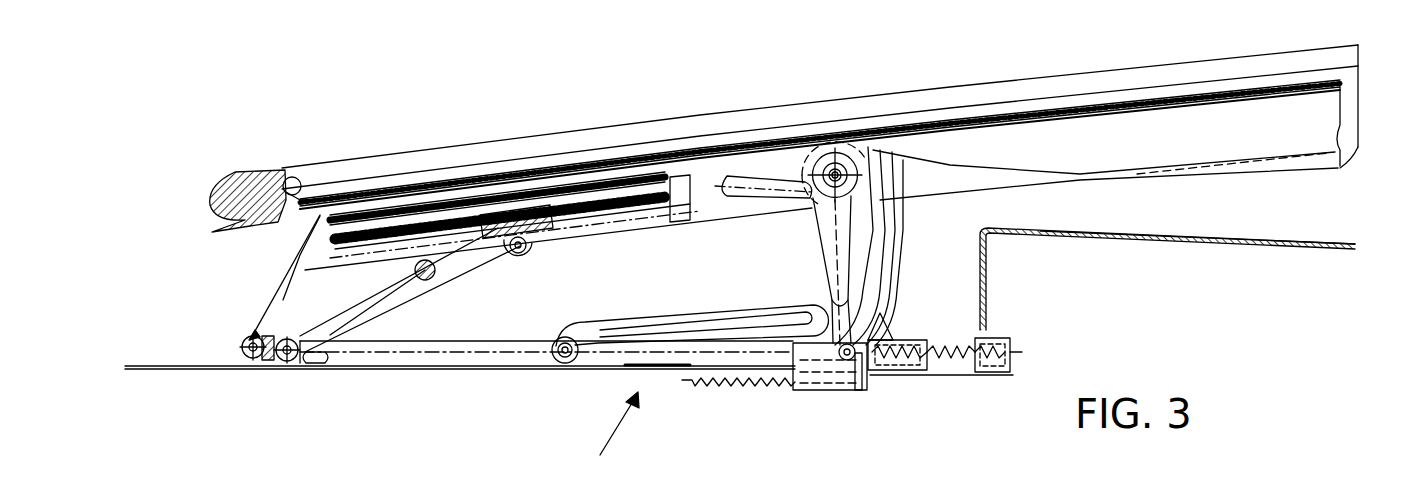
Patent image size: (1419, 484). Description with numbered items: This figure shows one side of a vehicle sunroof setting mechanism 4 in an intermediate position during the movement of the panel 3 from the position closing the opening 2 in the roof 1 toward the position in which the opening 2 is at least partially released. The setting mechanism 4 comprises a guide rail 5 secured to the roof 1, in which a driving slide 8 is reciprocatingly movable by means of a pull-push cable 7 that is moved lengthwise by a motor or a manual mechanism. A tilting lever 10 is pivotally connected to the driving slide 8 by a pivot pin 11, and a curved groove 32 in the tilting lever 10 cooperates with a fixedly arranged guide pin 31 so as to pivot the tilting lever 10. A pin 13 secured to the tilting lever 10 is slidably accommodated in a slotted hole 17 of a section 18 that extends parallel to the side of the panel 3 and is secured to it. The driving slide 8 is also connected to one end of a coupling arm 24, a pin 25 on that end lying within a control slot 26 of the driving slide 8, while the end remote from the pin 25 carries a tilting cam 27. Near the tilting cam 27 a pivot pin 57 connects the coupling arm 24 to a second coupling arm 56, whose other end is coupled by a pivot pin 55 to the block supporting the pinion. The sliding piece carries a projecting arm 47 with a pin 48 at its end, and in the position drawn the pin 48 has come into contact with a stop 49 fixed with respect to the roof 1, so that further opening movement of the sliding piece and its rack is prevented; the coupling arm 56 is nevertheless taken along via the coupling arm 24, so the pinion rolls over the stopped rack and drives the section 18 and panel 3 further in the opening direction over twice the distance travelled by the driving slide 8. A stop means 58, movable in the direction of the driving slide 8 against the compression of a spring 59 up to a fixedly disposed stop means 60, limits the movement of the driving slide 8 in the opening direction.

The roof 1 is at (1172, 242).
The opening 2 is at (967, 258).
The panel 3 is at (1020, 85).
The setting mechanism 4 is at (615, 433).
The guide rail 5 is at (445, 371).
The pull-push cable 7 is at (692, 383).
The driving slide 8 is at (700, 358).
The tilting lever 10 is at (888, 290).
The pivot pin 11 is at (857, 391).
The pin 13 is at (838, 172).
The slotted hole 17 is at (757, 195).
The section 18 is at (705, 185).
The coupling arm 24 is at (505, 345).
The pin 25 is at (565, 363).
The control slot 26 is at (686, 320).
The tilting cam 27 is at (289, 364).
The guide pin 31 is at (430, 279).
The curved groove 32 is at (888, 228).
The projecting arm 47 is at (290, 302).
The pin 48 is at (240, 343).
The stop 49 is at (268, 362).
The pivot pin 55 is at (535, 250).
The coupling arm 56 is at (472, 275).
The pivot pin 57 is at (315, 362).
The stop means 58 is at (908, 342).
The spring 59 is at (945, 350).
The stop means 60 is at (1010, 345).